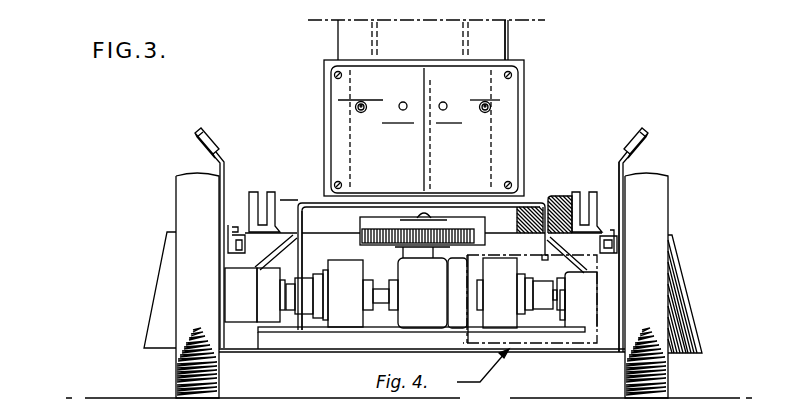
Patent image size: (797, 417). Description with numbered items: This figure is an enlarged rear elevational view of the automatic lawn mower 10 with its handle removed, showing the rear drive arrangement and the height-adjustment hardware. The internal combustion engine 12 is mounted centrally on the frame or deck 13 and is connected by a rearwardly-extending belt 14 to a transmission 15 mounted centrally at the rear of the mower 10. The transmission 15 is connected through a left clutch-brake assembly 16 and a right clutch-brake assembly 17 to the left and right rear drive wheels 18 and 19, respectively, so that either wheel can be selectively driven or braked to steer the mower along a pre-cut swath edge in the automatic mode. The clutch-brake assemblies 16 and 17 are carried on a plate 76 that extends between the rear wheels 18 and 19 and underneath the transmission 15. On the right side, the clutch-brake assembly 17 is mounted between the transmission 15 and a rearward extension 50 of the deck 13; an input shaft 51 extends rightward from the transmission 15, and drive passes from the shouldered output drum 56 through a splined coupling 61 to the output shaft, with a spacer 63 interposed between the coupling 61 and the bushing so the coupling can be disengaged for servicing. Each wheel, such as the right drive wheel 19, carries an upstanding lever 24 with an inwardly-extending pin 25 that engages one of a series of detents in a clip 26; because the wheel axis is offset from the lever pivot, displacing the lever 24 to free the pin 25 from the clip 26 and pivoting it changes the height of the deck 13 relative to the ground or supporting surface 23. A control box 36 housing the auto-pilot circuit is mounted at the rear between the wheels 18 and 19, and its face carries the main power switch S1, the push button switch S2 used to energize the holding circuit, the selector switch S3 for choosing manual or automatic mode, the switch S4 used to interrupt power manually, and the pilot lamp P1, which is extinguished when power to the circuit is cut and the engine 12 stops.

The automatic lawn mower 10 is at (350, 40).
The internal combustion engine 12 is at (509, 42).
The frame or deck 13 is at (163, 263).
The belt 14 is at (417, 240).
The transmission 15 is at (394, 326).
The left clutch-brake assembly 16 is at (352, 283).
The right clutch-brake assembly 17 is at (500, 285).
The left rear drive wheel 18 is at (176, 373).
The right rear drive wheel 19 is at (668, 379).
The ground or supporting surface 23 is at (78, 398).
The upstanding lever 24 is at (648, 133).
The inwardly-extending pin 25 is at (608, 227).
The clip 26 is at (612, 252).
The control box 36 is at (525, 103).
The rearward extension 50 is at (578, 302).
The input shaft 51 is at (381, 289).
The output drum 56 is at (525, 326).
The splined coupling 61 is at (545, 312).
The spacer 63 is at (556, 310).
The plate 76 is at (307, 334).
The pilot lamp P1 is at (427, 58).
The main power switch S1 is at (361, 118).
The push button switch S2 is at (403, 101).
The selector switch S3 is at (485, 118).
The switch S4 is at (444, 101).